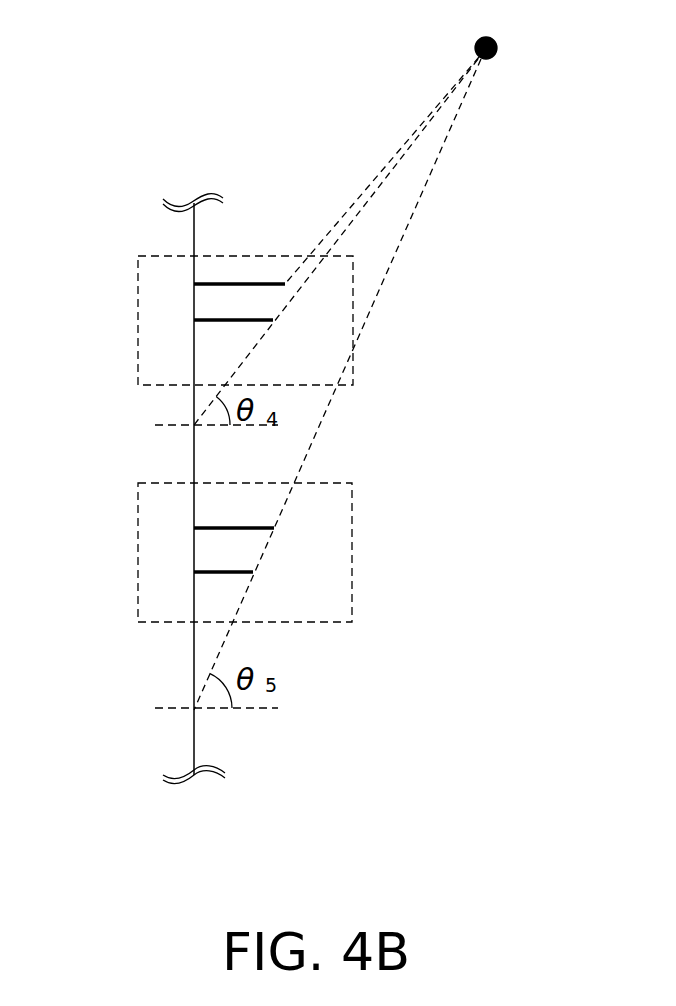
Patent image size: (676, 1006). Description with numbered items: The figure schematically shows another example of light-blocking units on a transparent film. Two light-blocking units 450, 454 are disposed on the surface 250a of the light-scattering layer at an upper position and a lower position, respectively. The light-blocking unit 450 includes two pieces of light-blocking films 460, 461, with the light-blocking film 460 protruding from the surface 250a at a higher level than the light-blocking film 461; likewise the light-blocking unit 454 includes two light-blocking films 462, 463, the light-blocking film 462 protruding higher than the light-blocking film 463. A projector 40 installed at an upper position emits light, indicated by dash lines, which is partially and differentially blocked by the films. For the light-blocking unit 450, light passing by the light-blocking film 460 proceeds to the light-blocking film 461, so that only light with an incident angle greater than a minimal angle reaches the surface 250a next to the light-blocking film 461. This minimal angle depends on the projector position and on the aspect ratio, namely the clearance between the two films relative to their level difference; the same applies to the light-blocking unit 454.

The projector 40 is at (498, 48).
The surface of the light-scattering layer 250a is at (194, 733).
The light-blocking unit 450 is at (158, 385).
The light-blocking film 460 is at (217, 287).
The light-blocking film 461 is at (217, 322).
The light-blocking unit 454 is at (162, 588).
The light-blocking film 462 is at (257, 533).
The light-blocking film 463 is at (253, 581).